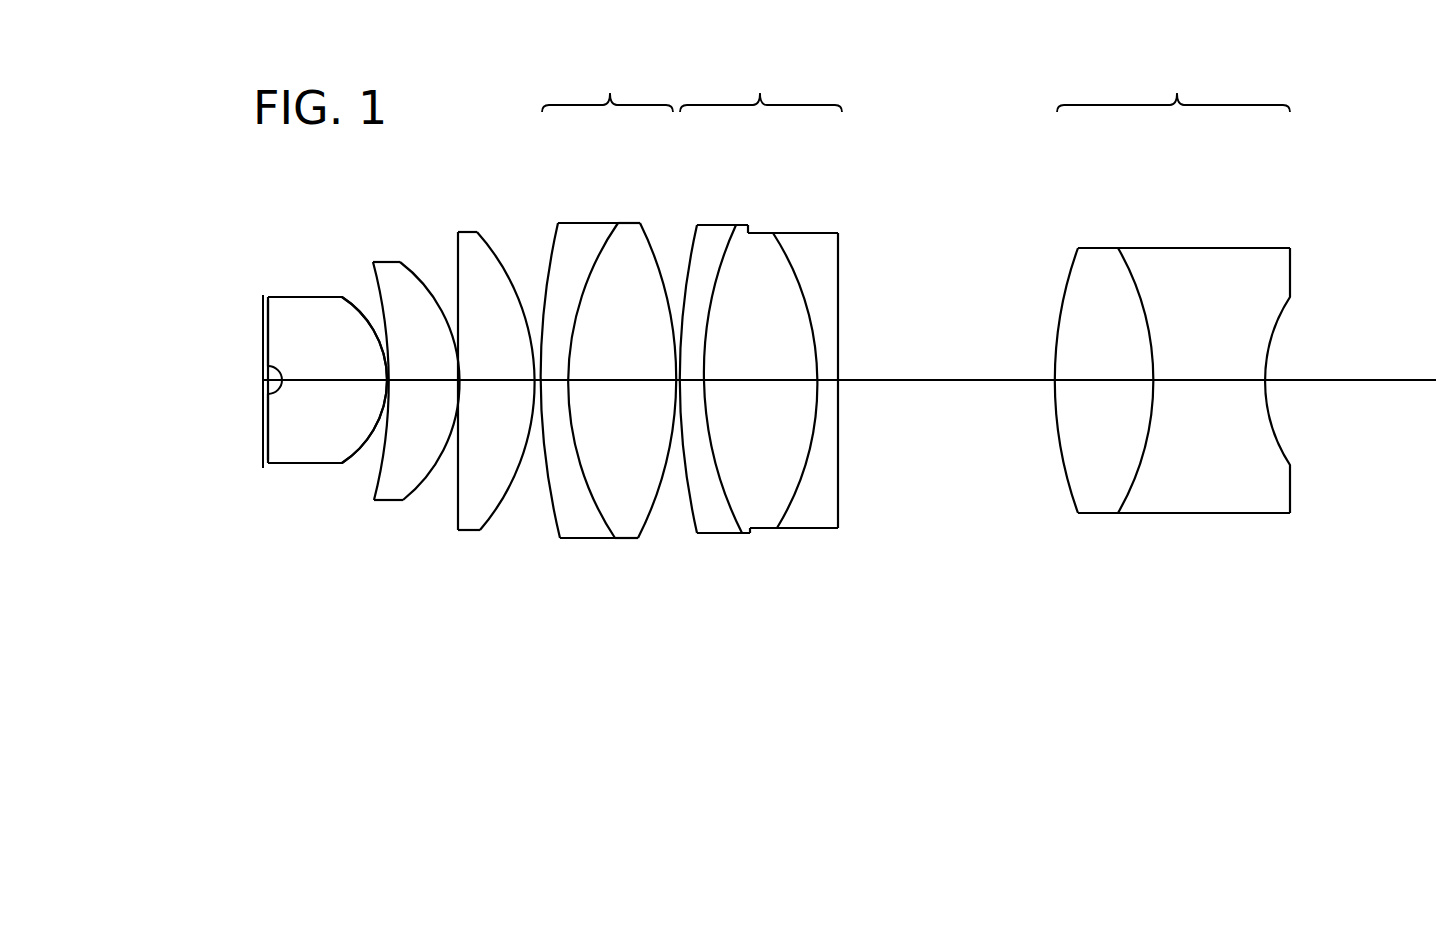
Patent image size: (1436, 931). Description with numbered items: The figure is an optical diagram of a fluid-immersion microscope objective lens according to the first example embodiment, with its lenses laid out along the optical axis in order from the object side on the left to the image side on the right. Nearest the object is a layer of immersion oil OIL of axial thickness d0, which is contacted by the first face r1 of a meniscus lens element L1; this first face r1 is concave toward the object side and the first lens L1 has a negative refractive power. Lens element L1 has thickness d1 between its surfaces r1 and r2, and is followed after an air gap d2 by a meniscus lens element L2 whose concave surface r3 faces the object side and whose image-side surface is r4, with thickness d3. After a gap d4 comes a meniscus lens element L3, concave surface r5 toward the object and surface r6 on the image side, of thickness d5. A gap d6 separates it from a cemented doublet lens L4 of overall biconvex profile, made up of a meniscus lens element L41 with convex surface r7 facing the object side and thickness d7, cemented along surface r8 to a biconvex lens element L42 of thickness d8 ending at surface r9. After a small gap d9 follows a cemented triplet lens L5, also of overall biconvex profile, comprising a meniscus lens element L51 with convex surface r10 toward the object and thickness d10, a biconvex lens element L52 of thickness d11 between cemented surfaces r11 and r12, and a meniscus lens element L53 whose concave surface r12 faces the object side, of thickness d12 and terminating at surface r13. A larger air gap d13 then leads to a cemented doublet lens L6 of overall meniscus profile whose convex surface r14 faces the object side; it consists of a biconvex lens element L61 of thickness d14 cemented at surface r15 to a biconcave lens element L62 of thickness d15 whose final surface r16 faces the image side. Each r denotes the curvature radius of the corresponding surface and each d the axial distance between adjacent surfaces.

The meniscus lens element L1 is at (295, 466).
The meniscus lens element L2 is at (403, 502).
The meniscus lens element L3 is at (480, 532).
The cemented doublet lens L4 is at (601, 341).
The meniscus lens element L41 is at (594, 540).
The biconvex lens element L42 is at (636, 540).
The cemented triplet lens L5 is at (786, 341).
The meniscus lens element L51 is at (720, 535).
The biconvex lens element L52 is at (758, 530).
The meniscus lens element L53 is at (818, 530).
The cemented doublet lens L6 is at (1185, 319).
The biconvex lens element L61 is at (1105, 515).
The biconcave lens element L62 is at (1215, 515).
The immersion oil OIL is at (265, 393).
The first face r1 is at (280, 393).
The lens surface r2 is at (345, 297).
The concave surface r3 is at (374, 300).
The lens surface r4 is at (401, 268).
The concave surface r5 is at (458, 238).
The lens surface r6 is at (489, 252).
The convex surface r7 is at (545, 235).
The lens surface r8 is at (597, 226).
The lens surface r9 is at (650, 228).
The convex surface r10 is at (692, 240).
The lens surface r11 is at (736, 232).
The concave surface r12 is at (799, 232).
The lens surface r13 is at (840, 248).
The convex surface r14 is at (1060, 253).
The lens surface r15 is at (1139, 254).
The lens surface r16 is at (1284, 310).
The axial distance d0 is at (266, 371).
The axial distance d1 is at (327, 367).
The axial distance d2 is at (373, 463).
The axial distance d3 is at (422, 367).
The axial distance d4 is at (450, 462).
The axial distance d5 is at (495, 367).
The axial distance d6 is at (522, 455).
The axial distance d7 is at (553, 385).
The axial distance d8 is at (622, 367).
The axial distance d9 is at (676, 425).
The axial distance d10 is at (690, 385).
The axial distance d11 is at (760, 367).
The axial distance d12 is at (828, 385).
The axial distance d13 is at (946, 367).
The axial distance d14 is at (1104, 367).
The axial distance d15 is at (1209, 367).